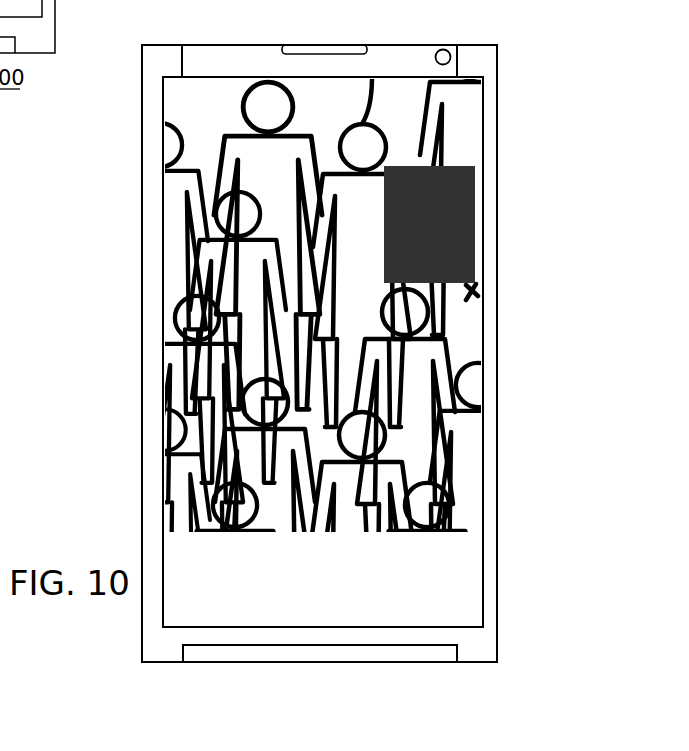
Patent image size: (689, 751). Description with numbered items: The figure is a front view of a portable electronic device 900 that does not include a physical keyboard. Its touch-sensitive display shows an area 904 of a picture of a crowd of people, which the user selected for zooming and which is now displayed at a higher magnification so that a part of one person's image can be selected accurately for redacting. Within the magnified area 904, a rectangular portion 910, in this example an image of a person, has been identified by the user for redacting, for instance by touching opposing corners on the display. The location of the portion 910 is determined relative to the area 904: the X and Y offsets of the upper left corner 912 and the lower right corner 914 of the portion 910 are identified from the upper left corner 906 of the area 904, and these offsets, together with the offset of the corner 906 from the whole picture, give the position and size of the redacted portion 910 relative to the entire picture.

The portable electronic device 900 is at (248, 692).
The area 904 is at (165, 210).
The upper left corner of the area 906 is at (308, 379).
The portion 910 is at (473, 223).
The upper left corner of the portion 912 is at (388, 118).
The lower right corner of the portion 914 is at (472, 282).